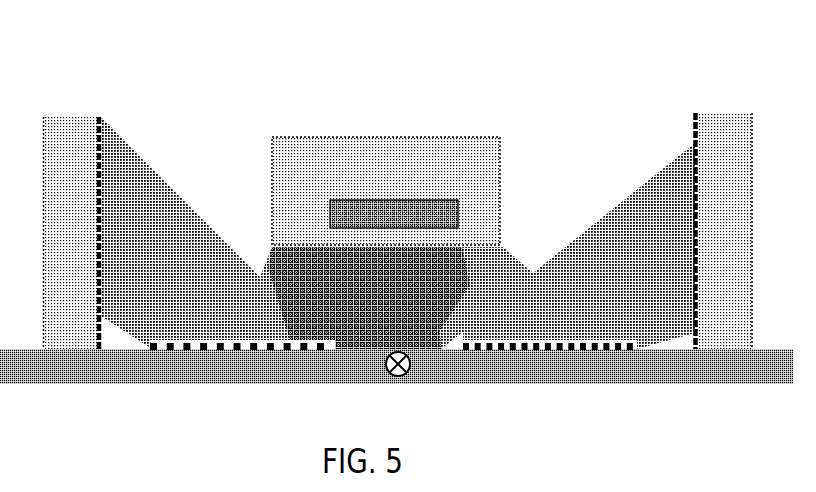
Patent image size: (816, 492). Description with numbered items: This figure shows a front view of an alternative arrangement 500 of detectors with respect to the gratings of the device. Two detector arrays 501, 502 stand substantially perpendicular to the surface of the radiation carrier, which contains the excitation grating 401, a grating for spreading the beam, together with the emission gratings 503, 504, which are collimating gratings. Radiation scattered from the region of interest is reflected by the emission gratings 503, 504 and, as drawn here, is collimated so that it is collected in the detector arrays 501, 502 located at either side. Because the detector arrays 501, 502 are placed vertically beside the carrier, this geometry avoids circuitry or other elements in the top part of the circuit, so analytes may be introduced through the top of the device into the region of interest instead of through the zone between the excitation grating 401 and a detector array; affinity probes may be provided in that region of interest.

The illumination system 500 is at (87, 36).
The detector array 501 is at (697, 188).
The detector array 502 is at (100, 178).
The emission grating 503 is at (578, 345).
The emission grating 504 is at (202, 340).
The excitation grating 401 is at (413, 348).